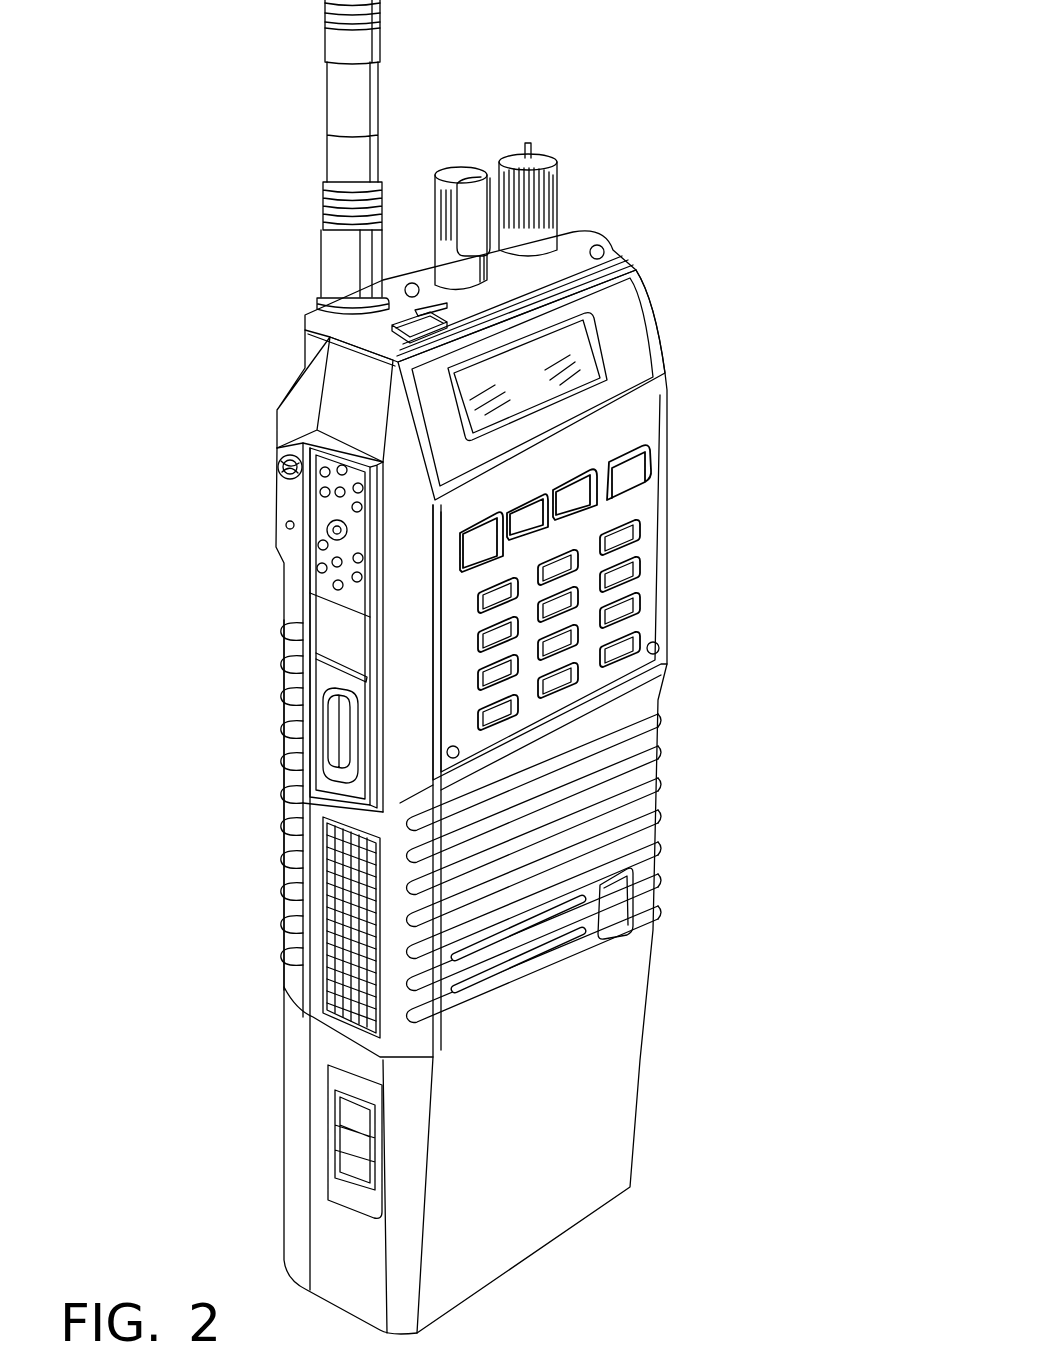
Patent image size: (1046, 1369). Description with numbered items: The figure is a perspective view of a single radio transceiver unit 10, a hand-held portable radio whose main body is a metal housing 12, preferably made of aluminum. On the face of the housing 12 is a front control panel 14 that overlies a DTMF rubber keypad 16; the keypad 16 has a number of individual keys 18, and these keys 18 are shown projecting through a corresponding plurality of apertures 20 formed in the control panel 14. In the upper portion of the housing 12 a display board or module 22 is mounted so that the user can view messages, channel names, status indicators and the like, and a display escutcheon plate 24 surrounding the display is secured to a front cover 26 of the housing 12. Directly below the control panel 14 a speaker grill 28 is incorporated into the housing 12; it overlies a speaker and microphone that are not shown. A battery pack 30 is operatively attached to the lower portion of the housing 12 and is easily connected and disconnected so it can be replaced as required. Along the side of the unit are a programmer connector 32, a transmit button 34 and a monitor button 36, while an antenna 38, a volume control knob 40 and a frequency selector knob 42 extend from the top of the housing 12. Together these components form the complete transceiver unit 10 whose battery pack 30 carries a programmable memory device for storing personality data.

The radio transceiver unit 10 is at (749, 461).
The metal housing 12 is at (280, 970).
The front control panel 14 is at (650, 582).
The DTMF rubber keypad 16 is at (570, 513).
The individual keys 18 is at (622, 567).
The apertures 20 is at (490, 622).
The display board 22 is at (572, 330).
The display escutcheon plate 24 is at (650, 373).
The front cover 26 is at (660, 690).
The speaker grill 28 is at (655, 775).
The battery pack 30 is at (633, 1048).
The programmer connector 32 is at (330, 530).
The transmit button 34 is at (330, 740).
The monitor button 36 is at (330, 633).
The antenna 38 is at (345, 97).
The volume control knob 40 is at (463, 170).
The frequency selector knob 42 is at (540, 160).